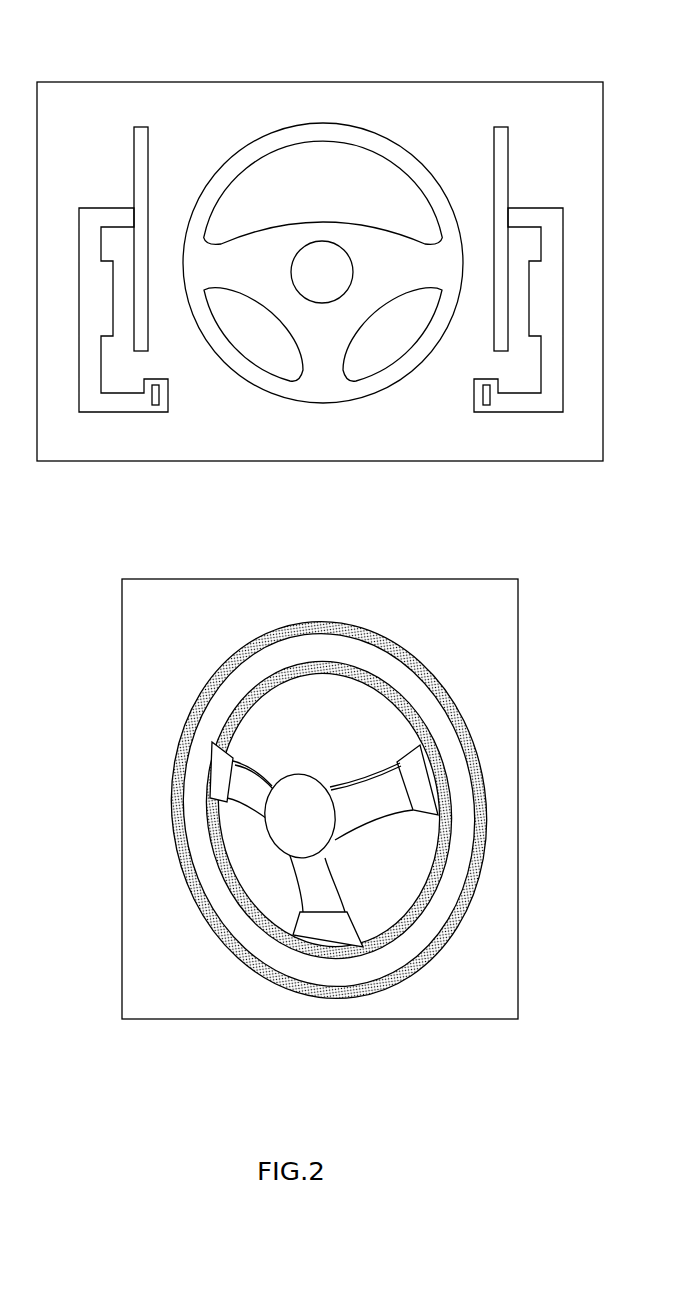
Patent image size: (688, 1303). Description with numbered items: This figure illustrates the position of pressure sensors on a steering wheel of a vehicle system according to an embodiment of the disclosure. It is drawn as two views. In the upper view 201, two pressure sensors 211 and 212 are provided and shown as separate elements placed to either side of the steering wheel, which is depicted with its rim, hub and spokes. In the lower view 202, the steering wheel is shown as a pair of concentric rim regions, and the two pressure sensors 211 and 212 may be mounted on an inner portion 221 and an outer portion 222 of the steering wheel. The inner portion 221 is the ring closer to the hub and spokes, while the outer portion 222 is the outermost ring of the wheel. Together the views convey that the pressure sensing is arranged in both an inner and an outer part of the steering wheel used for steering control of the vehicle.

The view showing two pressure sensors 201 is at (320, 82).
The view showing sensor mounting on steering wheel 202 is at (319, 579).
The pressure sensor 211 is at (504, 166).
The pressure sensor 212 is at (134, 165).
The inner portion of the steering wheel 221 is at (271, 916).
The outer portion of the steering wheel 222 is at (355, 989).